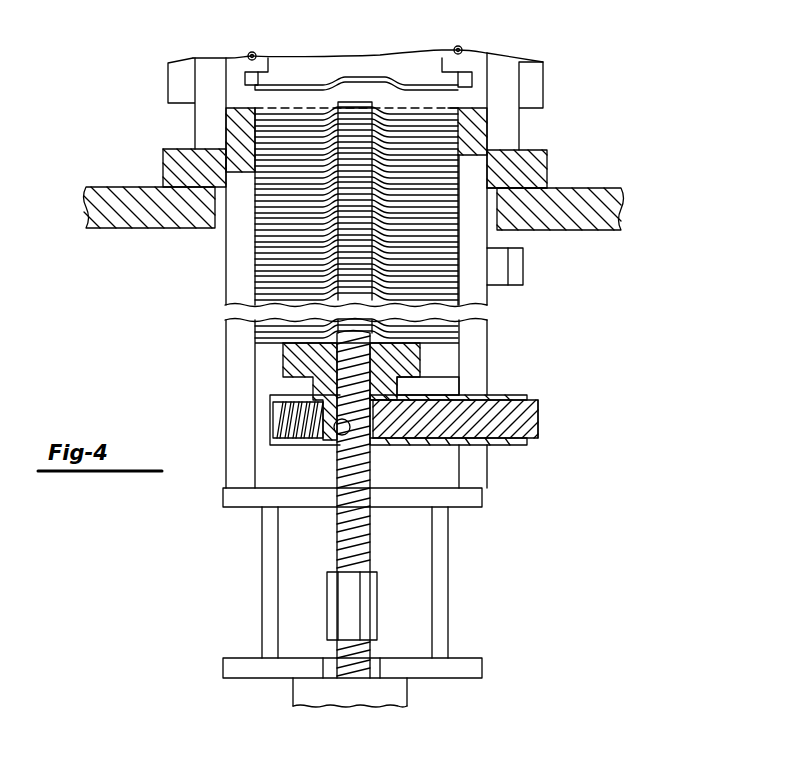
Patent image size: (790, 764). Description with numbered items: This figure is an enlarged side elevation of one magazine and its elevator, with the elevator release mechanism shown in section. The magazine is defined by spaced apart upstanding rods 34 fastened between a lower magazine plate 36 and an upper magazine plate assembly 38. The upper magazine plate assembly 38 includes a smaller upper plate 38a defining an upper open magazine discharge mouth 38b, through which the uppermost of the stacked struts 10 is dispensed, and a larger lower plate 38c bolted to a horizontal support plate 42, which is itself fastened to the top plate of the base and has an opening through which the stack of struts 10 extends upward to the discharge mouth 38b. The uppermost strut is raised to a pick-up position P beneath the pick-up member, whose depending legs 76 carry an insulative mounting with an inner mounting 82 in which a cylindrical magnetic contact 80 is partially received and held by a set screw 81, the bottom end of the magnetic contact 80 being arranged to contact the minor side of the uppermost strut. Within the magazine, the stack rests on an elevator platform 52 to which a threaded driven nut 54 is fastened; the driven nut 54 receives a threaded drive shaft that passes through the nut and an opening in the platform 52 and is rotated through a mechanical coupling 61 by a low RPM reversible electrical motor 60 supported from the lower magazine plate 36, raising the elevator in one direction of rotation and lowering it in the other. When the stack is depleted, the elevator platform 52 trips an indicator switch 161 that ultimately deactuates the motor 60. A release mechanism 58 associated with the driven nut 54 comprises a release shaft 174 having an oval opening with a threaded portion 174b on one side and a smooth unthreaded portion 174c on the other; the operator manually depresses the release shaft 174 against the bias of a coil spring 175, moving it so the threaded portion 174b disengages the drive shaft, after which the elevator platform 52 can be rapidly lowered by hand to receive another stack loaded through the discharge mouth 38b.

The strut 10 is at (364, 72).
The upstanding rod 34 is at (235, 345).
The lower magazine plate 36 is at (470, 493).
The upper magazine plate assembly 38 is at (150, 168).
The upper plate 38a is at (480, 140).
The magazine discharge mouth 38b is at (398, 100).
The lower plate 38c is at (542, 187).
The horizontal support plate 42 is at (618, 205).
The elevator platform 52 is at (427, 348).
The driven nut 54 is at (317, 445).
The release mechanism 58 is at (547, 401).
The electrical motor 60 is at (397, 688).
The mechanical coupling 61 is at (365, 613).
The leg 76 is at (203, 123).
The magnetic contact 80 is at (259, 78).
The set screw 81 is at (253, 52).
The inner mounting 82 is at (268, 58).
The indicator switch 161 is at (517, 260).
The release shaft 174 is at (530, 427).
The threaded portion 174b is at (338, 442).
The unthreaded portion 174c is at (373, 437).
The coil spring 175 is at (283, 422).
The pick-up position P is at (466, 103).